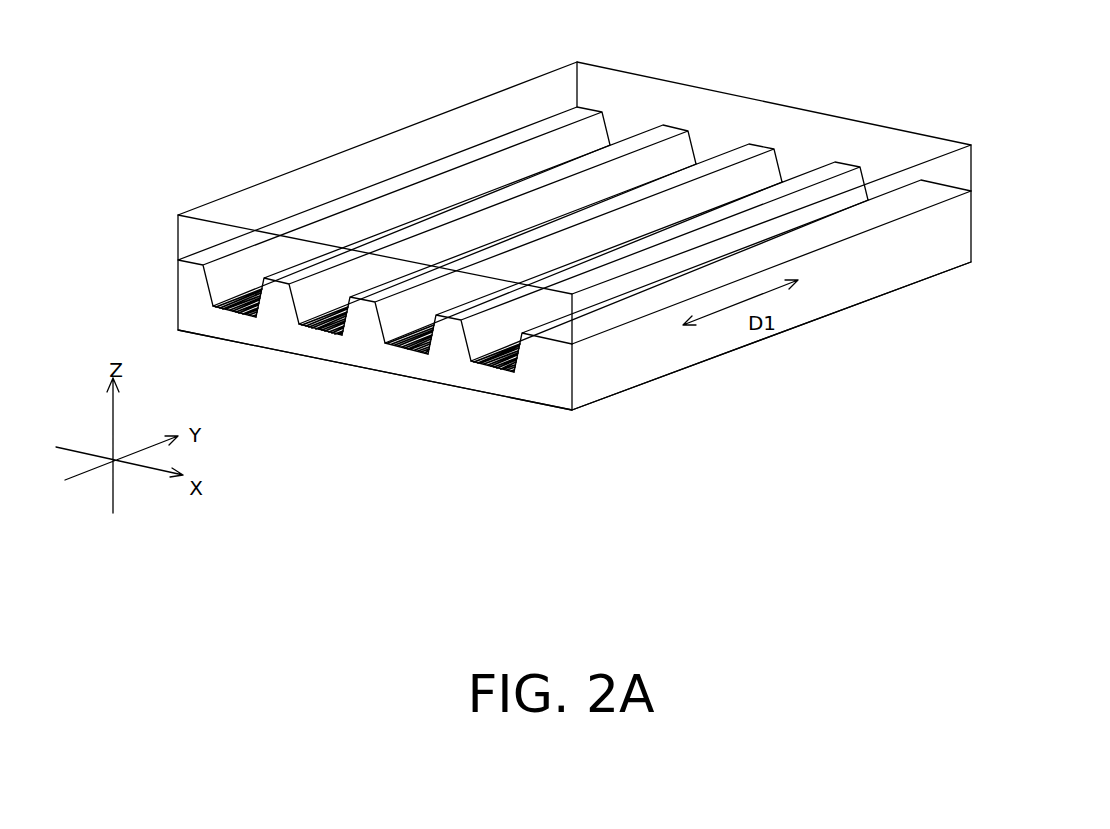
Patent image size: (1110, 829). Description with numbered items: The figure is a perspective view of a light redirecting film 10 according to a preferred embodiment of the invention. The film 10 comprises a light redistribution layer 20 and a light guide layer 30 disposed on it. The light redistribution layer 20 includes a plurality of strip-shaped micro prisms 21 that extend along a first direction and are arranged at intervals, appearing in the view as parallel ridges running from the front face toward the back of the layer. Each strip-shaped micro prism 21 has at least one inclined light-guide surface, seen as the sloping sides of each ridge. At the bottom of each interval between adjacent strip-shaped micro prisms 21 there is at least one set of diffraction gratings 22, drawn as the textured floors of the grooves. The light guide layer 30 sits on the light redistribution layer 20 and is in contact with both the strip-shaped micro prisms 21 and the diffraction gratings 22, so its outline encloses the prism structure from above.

The light redirecting film 10 is at (243, 90).
The light redistribution layer 20 is at (643, 359).
The strip-shaped micro prism 21 is at (365, 318).
The diffraction grating 22 is at (493, 368).
The light guide layer 30 is at (956, 168).